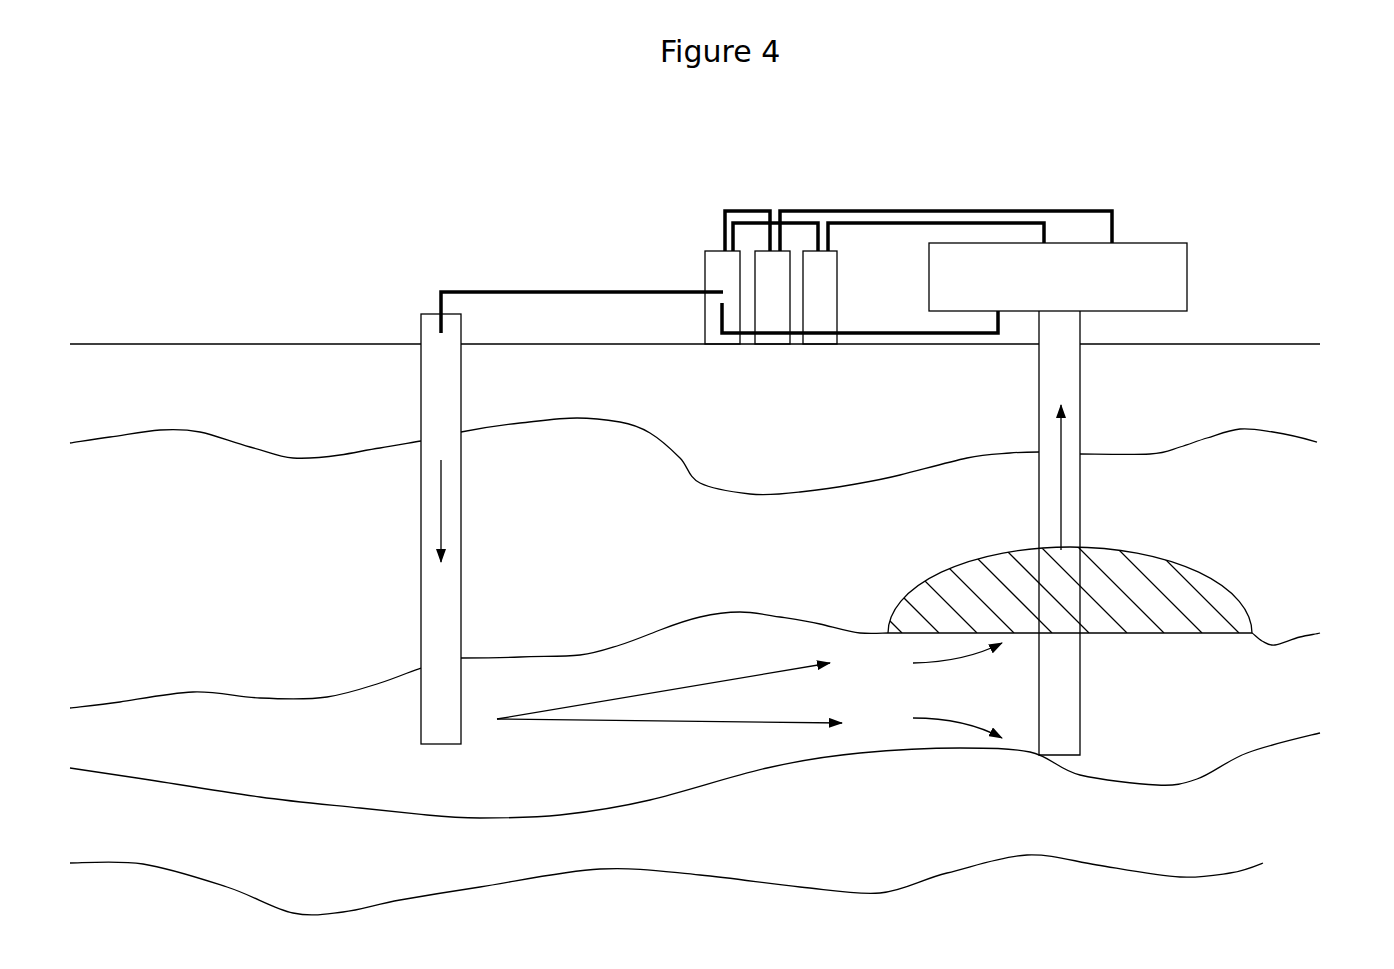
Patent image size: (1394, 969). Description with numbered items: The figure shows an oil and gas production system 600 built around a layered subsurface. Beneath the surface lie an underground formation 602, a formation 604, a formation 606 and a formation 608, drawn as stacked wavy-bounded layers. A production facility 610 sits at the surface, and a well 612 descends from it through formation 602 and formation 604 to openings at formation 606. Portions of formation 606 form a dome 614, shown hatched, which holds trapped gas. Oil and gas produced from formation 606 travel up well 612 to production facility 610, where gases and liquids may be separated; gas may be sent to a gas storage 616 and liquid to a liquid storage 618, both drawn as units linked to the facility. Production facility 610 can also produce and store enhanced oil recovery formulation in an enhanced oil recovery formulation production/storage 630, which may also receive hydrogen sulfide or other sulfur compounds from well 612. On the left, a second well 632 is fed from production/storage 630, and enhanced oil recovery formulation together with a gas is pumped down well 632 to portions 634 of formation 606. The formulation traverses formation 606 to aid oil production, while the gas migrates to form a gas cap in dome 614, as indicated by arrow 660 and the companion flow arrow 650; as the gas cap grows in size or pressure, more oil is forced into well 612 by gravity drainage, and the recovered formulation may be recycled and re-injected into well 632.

The system 600 is at (440, 192).
The underground formation 602 is at (693, 447).
The formation 604 is at (695, 595).
The formation 606 is at (695, 737).
The formation 608 is at (666, 858).
The production facility 610 is at (1058, 277).
The well 612 is at (1060, 372).
The dome 614 is at (1140, 605).
The gas storage 616 is at (818, 277).
The liquid storage 618 is at (777, 277).
The enhanced oil recovery formulation production/storage 630 is at (719, 268).
The well 632 is at (442, 388).
The portions of formation 634 is at (479, 713).
The fluid flow toward production well 650 is at (957, 665).
The arrow 660 is at (957, 731).